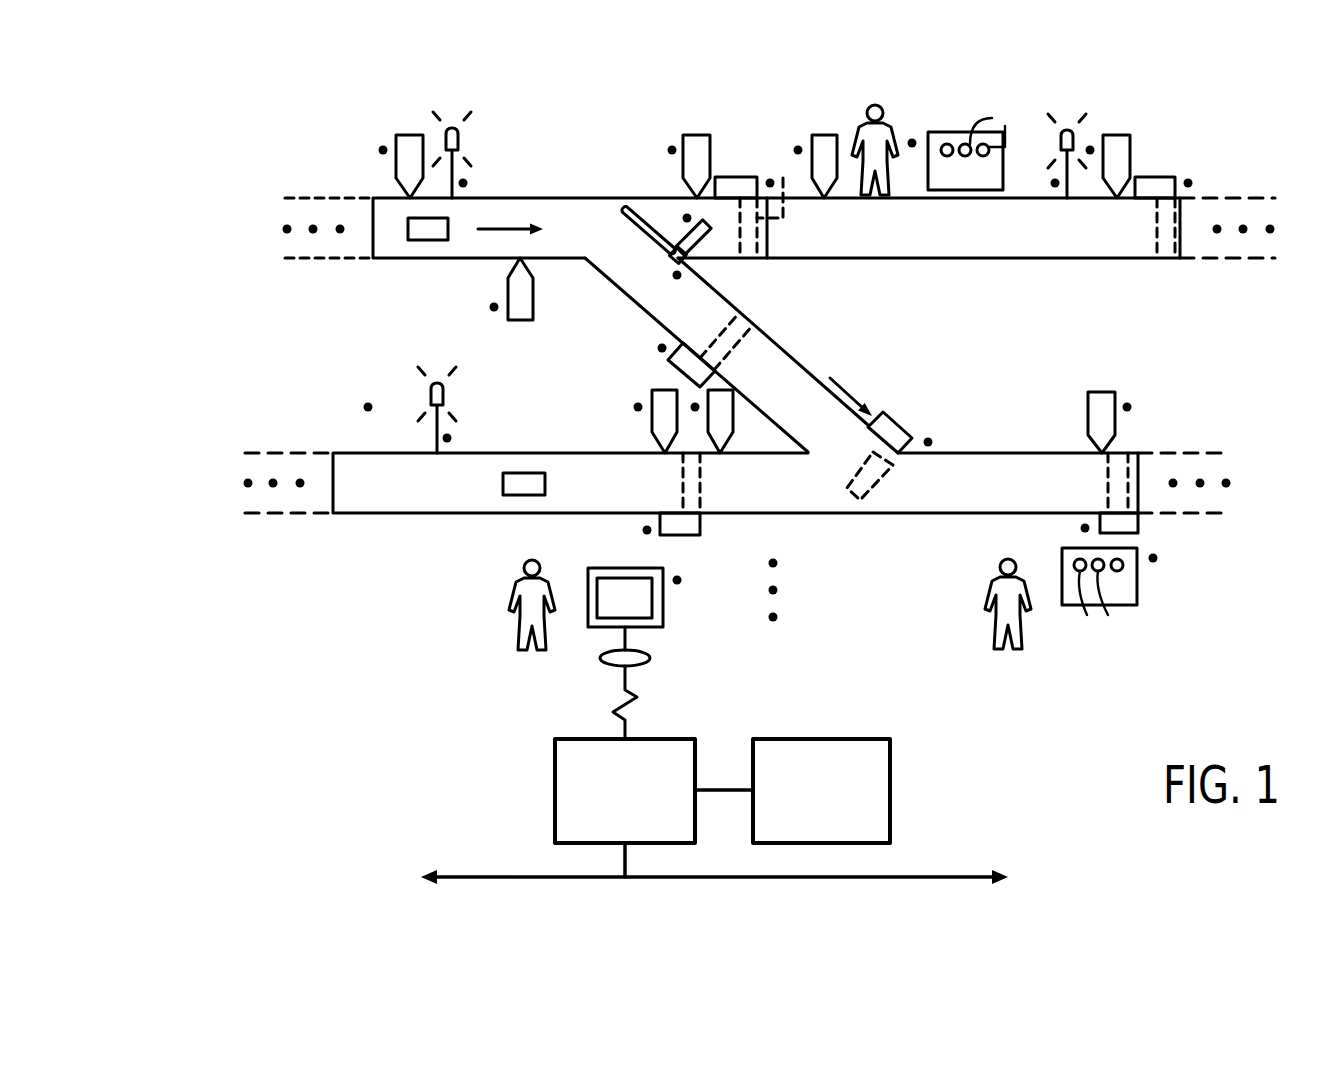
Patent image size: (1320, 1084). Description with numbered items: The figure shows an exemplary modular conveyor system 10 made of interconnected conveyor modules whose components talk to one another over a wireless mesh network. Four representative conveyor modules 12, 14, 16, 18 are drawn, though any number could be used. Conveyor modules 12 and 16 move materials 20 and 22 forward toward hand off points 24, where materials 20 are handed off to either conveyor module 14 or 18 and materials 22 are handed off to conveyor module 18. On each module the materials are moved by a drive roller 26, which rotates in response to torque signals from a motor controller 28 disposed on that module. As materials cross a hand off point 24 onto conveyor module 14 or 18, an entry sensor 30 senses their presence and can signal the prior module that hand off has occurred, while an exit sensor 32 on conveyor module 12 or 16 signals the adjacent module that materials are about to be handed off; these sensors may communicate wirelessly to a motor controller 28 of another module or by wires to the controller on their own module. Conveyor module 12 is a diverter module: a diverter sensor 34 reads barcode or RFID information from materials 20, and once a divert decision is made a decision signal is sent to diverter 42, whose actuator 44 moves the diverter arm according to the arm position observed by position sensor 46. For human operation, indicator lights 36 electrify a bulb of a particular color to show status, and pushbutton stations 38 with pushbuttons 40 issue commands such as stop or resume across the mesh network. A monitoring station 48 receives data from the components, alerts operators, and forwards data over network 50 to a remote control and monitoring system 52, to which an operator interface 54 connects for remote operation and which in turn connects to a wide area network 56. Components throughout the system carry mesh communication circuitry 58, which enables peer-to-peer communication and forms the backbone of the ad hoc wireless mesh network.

The modular conveyor system 10 is at (236, 130).
The conveyor module 12 is at (598, 197).
The conveyor module 14 is at (1037, 260).
The conveyor module 16 is at (403, 515).
The conveyor module 18 is at (952, 515).
The materials 20 is at (430, 241).
The materials 22 is at (527, 472).
The hand off point 24 is at (790, 245).
The drive roller 26 is at (1108, 468).
The motor controller 28 is at (747, 176).
The entry sensor 30 is at (410, 134).
The exit sensor 32 is at (697, 134).
The diverter sensor 34 is at (520, 322).
The indicator lights 36 is at (460, 140).
The pushbutton stations 38 is at (951, 131).
The pushbuttons 40 is at (1041, 372).
The diverter 42 is at (624, 218).
The actuator 44 is at (672, 262).
The position sensor 46 is at (700, 243).
The monitoring station 48 is at (650, 628).
The network 50 is at (602, 662).
The remote control and monitoring system 52 is at (554, 758).
The operator interface 54 is at (848, 738).
The wide area network 56 is at (713, 880).
The mesh communication circuitry 58 is at (383, 150).